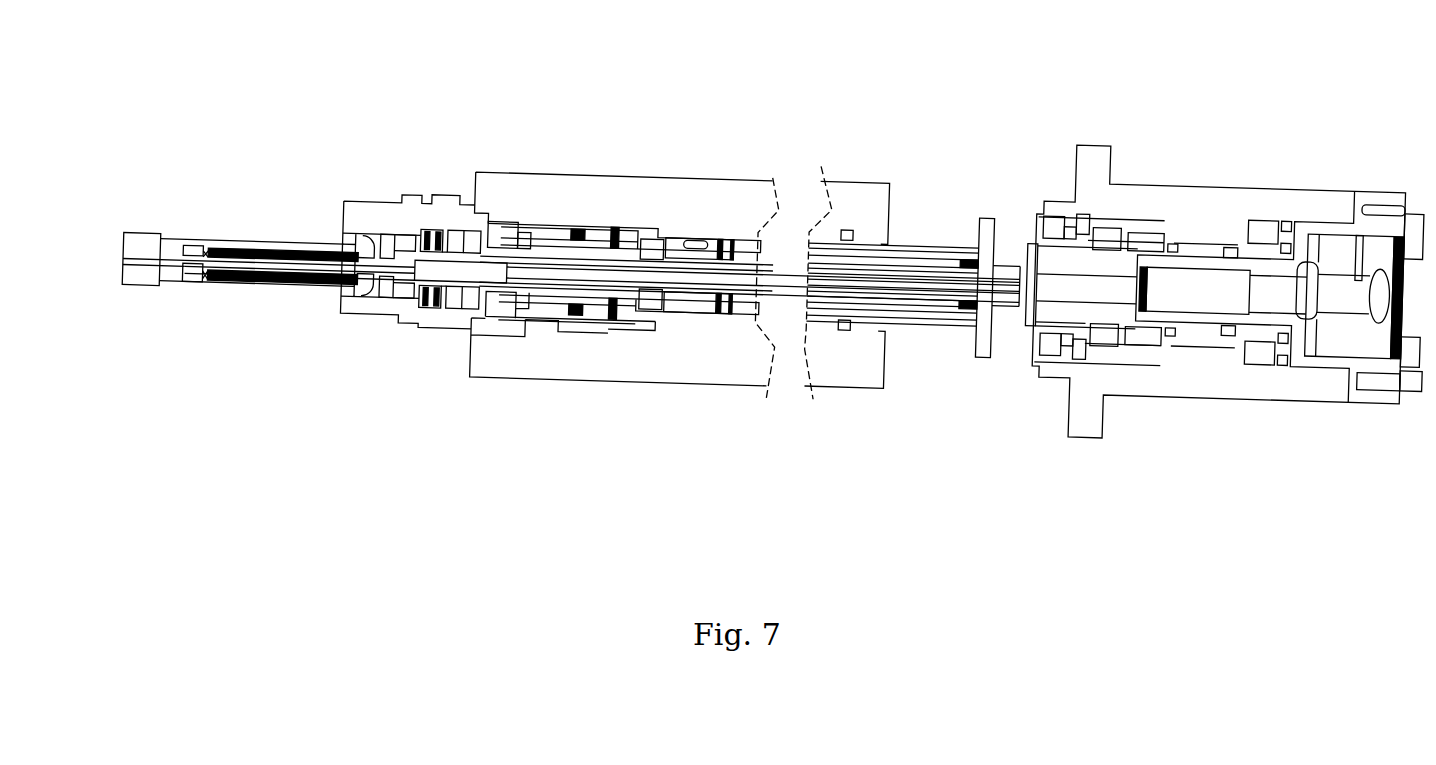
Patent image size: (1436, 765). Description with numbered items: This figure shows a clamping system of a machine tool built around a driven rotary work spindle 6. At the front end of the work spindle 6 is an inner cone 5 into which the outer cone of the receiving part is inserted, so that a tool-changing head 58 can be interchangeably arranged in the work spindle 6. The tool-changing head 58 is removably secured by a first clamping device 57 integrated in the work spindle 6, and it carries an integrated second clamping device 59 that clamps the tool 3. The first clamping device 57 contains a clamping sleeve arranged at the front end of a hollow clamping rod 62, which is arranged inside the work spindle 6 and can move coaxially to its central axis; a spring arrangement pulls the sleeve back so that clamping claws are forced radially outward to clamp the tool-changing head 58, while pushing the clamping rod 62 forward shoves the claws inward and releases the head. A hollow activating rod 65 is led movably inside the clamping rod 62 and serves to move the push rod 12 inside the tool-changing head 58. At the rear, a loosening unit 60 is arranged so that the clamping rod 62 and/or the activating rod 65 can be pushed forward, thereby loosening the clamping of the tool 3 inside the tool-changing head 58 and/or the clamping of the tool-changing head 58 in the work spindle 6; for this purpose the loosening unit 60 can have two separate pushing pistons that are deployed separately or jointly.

The tool 3 is at (138, 285).
The inner cone 5 is at (533, 190).
The work spindle 6 is at (642, 190).
The push rod 12 is at (402, 308).
The first clamping device 57 is at (563, 328).
The tool-changing head 58 is at (392, 190).
The second clamping device 59 is at (215, 284).
The loosening unit 60 is at (1197, 170).
The clamping rod 62 is at (663, 303).
The activating rod 65 is at (902, 292).